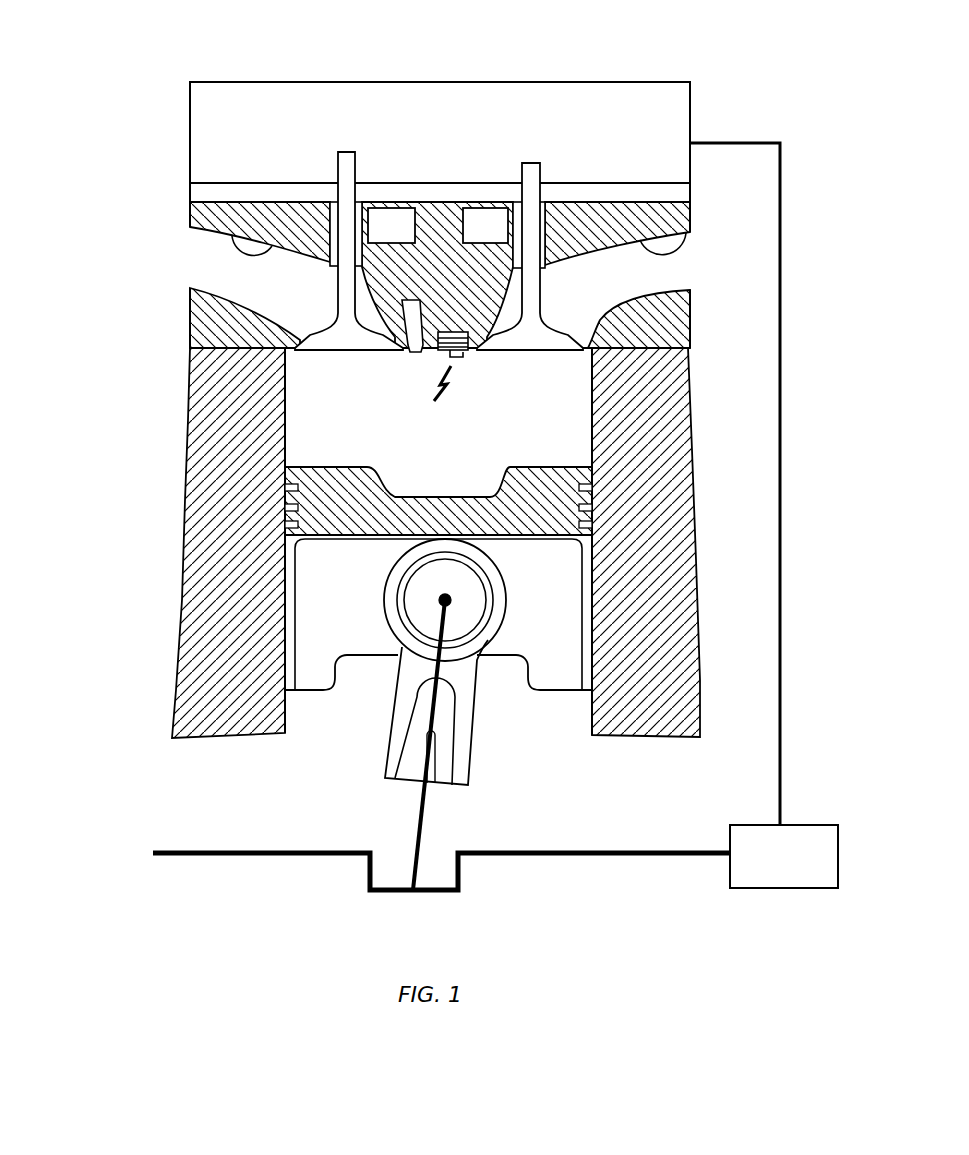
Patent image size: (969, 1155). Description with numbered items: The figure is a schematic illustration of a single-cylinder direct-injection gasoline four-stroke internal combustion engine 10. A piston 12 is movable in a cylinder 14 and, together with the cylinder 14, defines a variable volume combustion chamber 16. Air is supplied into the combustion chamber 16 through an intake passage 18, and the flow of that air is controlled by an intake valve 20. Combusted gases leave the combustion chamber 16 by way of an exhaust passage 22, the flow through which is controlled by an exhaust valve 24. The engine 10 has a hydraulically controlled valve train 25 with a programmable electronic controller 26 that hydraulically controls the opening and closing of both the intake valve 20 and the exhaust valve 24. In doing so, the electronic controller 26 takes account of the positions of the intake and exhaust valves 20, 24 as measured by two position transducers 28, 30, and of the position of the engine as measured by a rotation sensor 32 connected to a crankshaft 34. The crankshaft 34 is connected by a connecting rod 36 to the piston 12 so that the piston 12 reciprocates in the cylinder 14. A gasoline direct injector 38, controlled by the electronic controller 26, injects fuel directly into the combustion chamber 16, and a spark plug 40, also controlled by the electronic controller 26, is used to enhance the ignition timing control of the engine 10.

The internal combustion engine 10 is at (159, 112).
The piston 12 is at (332, 465).
The cylinder 14 is at (290, 412).
The combustion chamber 16 is at (560, 447).
The intake passage 18 is at (190, 218).
The intake valve 20 is at (343, 342).
The exhaust passage 22 is at (690, 240).
The exhaust valve 24 is at (535, 342).
The hydraulically controlled valve train 25 is at (782, 348).
The electronic controller 26 is at (433, 153).
The position transducer 28 is at (391, 225).
The position transducer 30 is at (486, 225).
The rotation sensor 32 is at (805, 832).
The crankshaft 34 is at (368, 878).
The connecting rod 36 is at (398, 733).
The gasoline direct injector 38 is at (403, 352).
The spark plug 40 is at (465, 352).